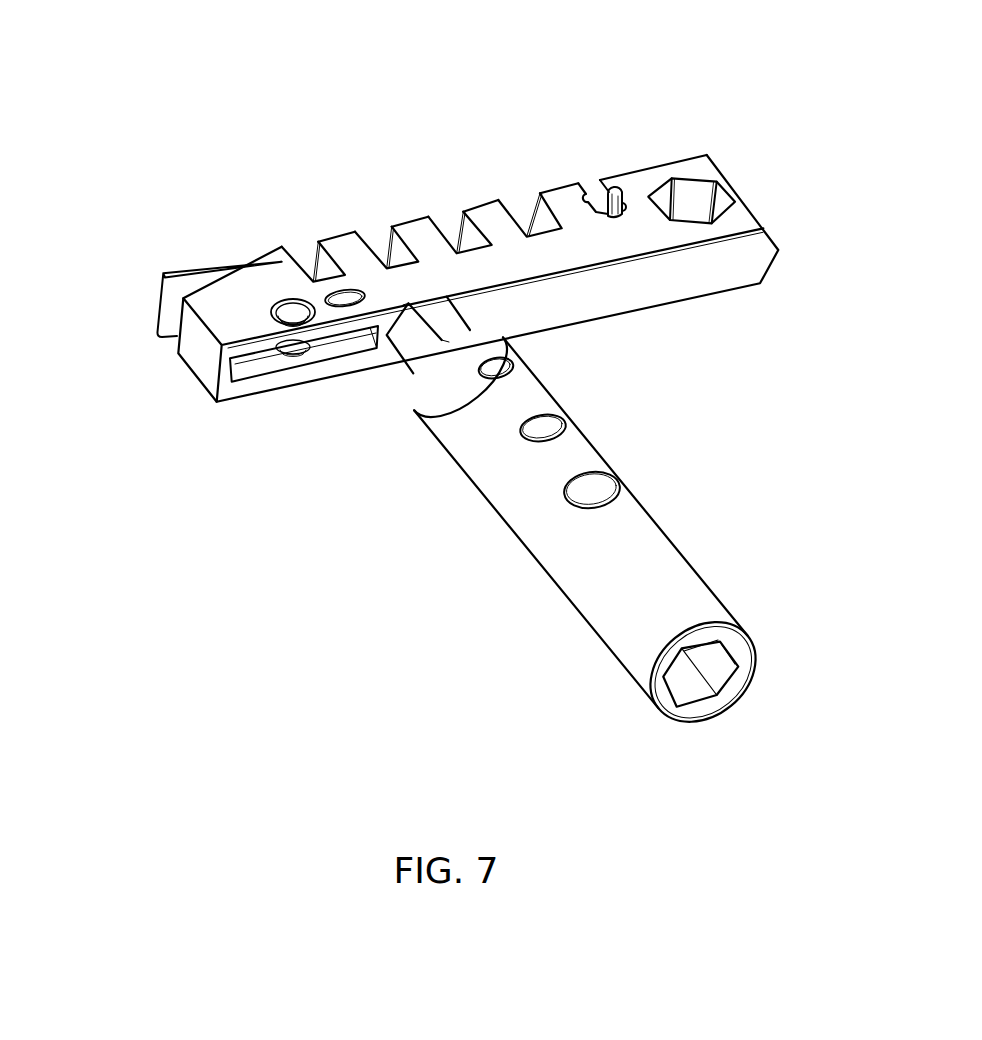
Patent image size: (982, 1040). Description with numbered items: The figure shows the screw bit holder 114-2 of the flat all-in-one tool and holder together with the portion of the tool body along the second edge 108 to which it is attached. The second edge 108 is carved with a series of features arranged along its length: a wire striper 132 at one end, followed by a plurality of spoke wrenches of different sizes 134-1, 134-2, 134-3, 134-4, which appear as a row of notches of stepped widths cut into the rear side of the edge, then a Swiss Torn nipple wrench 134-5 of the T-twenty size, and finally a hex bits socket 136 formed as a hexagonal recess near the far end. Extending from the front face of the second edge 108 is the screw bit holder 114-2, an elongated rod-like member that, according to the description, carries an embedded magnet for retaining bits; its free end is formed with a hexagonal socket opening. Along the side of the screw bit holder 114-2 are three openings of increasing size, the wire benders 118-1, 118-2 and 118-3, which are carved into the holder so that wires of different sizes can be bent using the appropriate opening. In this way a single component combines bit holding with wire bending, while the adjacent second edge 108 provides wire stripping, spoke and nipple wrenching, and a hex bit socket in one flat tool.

The second edge 108 is at (72, 163).
The wire striper 132 is at (173, 300).
The spoke wrench 134-1 is at (307, 260).
The spoke wrench 134-2 is at (383, 246).
The spoke wrench 134-3 is at (452, 240).
The spoke wrench 134-4 is at (528, 212).
The Swiss T-20 Torn nipple wrench 134-5 is at (595, 212).
The Hex Bits socket 136 is at (683, 192).
The screw bit holder 114-2 is at (650, 567).
The wire bender 118-1 is at (588, 492).
The wire bender 118-2 is at (545, 430).
The wire bender 118-3 is at (497, 367).